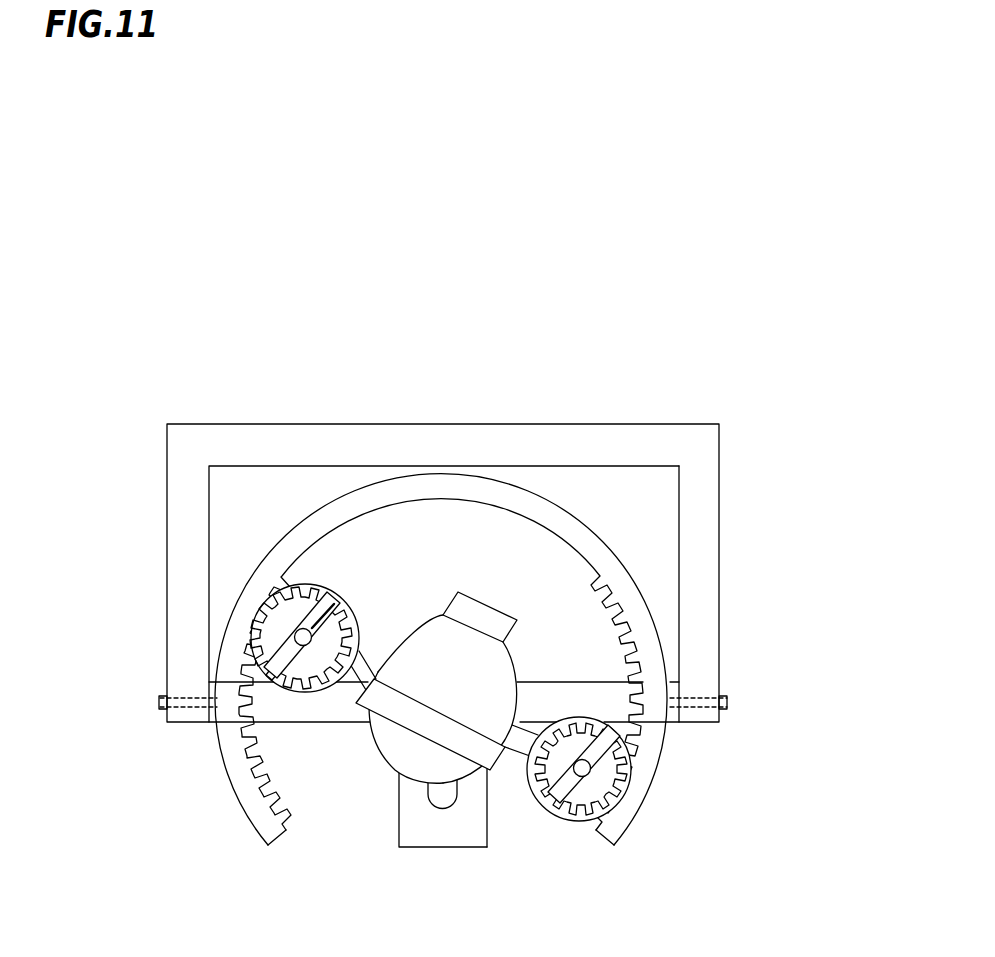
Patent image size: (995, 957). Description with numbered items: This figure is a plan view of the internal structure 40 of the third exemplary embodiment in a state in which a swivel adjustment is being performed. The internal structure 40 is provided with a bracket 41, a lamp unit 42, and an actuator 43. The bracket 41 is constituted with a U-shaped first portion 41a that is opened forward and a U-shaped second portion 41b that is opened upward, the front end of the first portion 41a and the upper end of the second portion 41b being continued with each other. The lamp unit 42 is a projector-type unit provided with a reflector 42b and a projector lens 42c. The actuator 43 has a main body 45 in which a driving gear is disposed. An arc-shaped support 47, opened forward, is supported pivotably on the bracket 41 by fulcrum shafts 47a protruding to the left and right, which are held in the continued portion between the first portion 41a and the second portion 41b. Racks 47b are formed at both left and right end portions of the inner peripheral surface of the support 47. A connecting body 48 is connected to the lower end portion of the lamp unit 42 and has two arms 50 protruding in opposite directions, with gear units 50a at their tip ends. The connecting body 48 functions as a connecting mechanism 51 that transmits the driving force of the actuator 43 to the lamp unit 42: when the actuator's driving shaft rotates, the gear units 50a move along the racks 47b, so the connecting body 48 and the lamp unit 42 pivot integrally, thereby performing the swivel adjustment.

The internal structure 40 is at (138, 397).
The bracket 41 is at (707, 532).
The first portion 41a is at (707, 552).
The second portion 41b is at (305, 717).
The lamp unit 42 is at (412, 632).
The reflector 42b is at (425, 628).
The projector lens 42c is at (388, 742).
The actuator 43 is at (450, 833).
The main body 45 is at (487, 813).
The support 47 is at (653, 766).
The fulcrum shafts 47a is at (812, 652).
The racks 47b is at (622, 602).
The connecting body 48 is at (364, 657).
The connecting mechanism 51 is at (430, 724).
The arms 50 is at (374, 657).
The gear units 50a is at (290, 582).